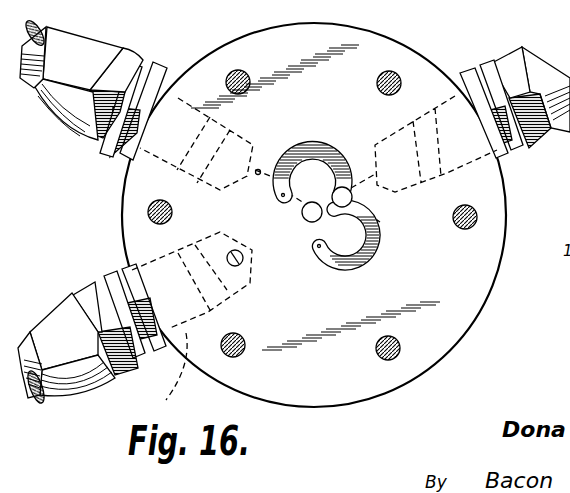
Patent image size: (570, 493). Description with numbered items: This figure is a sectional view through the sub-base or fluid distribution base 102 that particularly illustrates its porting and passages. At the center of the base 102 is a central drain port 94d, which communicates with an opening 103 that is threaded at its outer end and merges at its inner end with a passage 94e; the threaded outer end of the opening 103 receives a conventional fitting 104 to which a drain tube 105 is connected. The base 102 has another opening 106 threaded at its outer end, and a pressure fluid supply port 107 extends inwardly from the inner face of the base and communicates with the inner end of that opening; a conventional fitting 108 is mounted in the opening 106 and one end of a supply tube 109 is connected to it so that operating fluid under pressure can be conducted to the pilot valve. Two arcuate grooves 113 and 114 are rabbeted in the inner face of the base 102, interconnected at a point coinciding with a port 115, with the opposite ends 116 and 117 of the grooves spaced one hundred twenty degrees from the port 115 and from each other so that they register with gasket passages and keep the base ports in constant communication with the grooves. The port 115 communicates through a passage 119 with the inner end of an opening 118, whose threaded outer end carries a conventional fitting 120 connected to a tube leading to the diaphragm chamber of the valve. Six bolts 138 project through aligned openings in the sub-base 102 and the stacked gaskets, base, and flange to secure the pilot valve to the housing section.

The base 102 is at (489, 297).
The opening 103 is at (182, 96).
The fitting 104 is at (130, 140).
The drain tube 105 is at (57, 27).
The opening 106 is at (148, 397).
The pressure fluid supply port 107 is at (239, 252).
The fitting 108 is at (103, 270).
The supply tube 109 is at (53, 397).
The arcuate groove 113 is at (317, 141).
The arcuate groove 114 is at (376, 257).
The port 115 is at (342, 208).
The groove end 116 is at (321, 268).
The groove end 117 is at (276, 198).
The opening 118 is at (445, 100).
The passage 119 is at (385, 207).
The fitting 120 is at (517, 160).
The bolts 138 is at (246, 72).
The central drain port 94d is at (308, 222).
The passage 94e is at (259, 169).